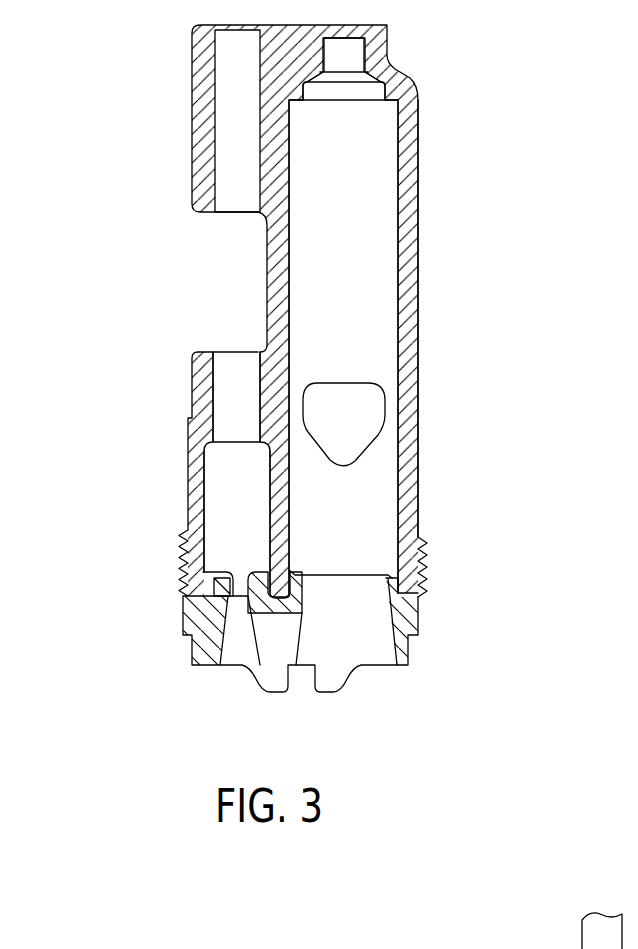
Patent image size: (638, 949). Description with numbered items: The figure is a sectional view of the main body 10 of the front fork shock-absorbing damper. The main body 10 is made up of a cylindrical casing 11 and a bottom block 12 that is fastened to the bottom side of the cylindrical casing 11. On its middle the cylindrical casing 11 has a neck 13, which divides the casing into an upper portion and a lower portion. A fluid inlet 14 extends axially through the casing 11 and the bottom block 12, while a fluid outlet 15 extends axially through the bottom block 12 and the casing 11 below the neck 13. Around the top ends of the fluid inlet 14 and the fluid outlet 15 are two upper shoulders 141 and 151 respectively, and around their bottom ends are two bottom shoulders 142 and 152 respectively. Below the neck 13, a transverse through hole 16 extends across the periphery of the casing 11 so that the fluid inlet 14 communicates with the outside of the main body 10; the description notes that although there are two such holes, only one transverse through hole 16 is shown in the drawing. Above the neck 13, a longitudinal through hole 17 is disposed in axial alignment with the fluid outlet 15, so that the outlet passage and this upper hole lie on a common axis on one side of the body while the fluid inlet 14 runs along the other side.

The main body 10 is at (386, 396).
The cylindrical casing 11 is at (422, 516).
The bottom block 12 is at (350, 629).
The neck 13 is at (233, 268).
The fluid inlet 14 is at (366, 238).
The upper shoulder 141 is at (377, 72).
The bottom shoulder 142 is at (303, 588).
The fluid outlet 15 is at (227, 502).
The upper shoulder 151 is at (202, 433).
The bottom shoulder 152 is at (207, 583).
The transverse through hole 16 is at (353, 428).
The longitudinal through hole 17 is at (233, 138).